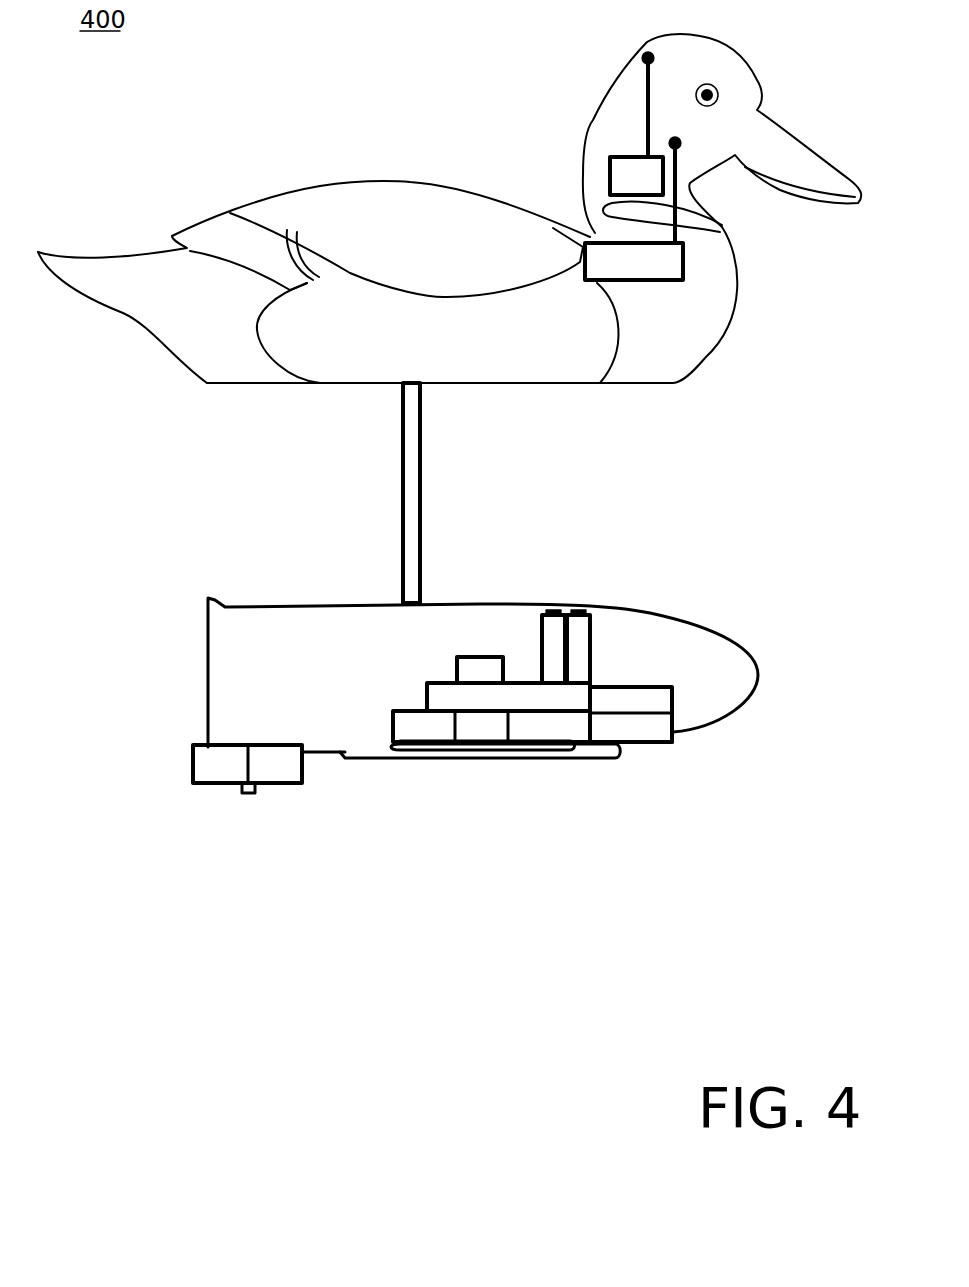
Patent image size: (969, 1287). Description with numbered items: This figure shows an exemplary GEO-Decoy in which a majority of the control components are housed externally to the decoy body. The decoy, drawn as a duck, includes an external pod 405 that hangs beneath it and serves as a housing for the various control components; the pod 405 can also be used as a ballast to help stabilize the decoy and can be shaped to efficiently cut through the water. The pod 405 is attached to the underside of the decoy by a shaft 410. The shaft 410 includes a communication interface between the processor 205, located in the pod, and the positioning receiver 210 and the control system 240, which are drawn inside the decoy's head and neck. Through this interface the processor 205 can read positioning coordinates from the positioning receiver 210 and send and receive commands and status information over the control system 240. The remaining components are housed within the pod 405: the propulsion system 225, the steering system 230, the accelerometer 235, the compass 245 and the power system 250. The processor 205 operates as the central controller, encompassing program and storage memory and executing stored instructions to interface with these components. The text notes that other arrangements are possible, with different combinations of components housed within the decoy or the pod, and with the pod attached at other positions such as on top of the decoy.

The processor 205 is at (442, 680).
The positioning receiver 210 is at (610, 173).
The propulsion system 225 is at (380, 762).
The steering system 230 is at (283, 785).
The accelerometer 235 is at (673, 733).
The control system 240 is at (682, 265).
The compass 245 is at (473, 657).
The power system 250 is at (593, 632).
The external pod 405 is at (742, 650).
The shaft 410 is at (423, 512).